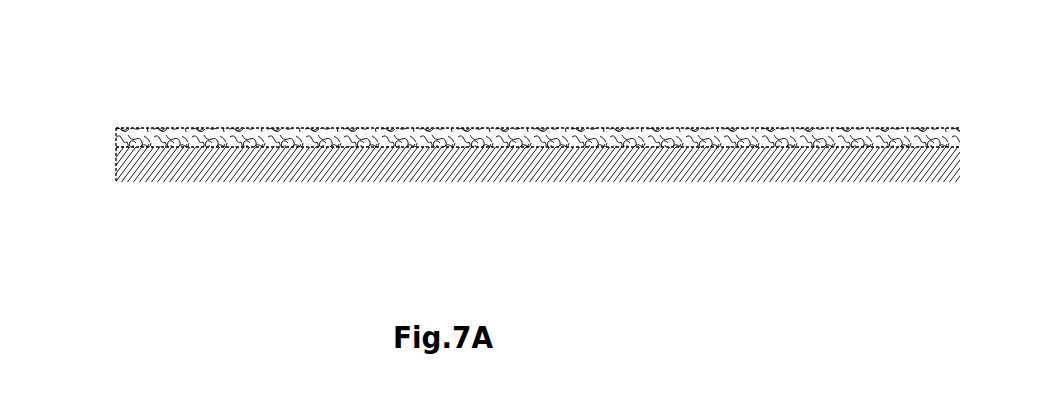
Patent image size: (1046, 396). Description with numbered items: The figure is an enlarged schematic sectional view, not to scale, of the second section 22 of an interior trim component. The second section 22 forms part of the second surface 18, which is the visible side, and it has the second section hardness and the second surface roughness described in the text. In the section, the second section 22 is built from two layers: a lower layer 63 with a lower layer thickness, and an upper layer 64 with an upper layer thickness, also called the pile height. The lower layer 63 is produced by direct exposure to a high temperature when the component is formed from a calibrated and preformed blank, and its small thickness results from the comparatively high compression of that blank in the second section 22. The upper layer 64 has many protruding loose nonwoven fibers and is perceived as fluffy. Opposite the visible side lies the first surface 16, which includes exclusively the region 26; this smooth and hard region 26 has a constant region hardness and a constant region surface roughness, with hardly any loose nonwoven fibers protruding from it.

The second surface 18 is at (250, 96).
The second section 22 is at (502, 197).
The upper layer 64 is at (119, 129).
The lower layer 63 is at (119, 150).
The first surface 16 is at (519, 175).
The region 26 is at (538, 164).